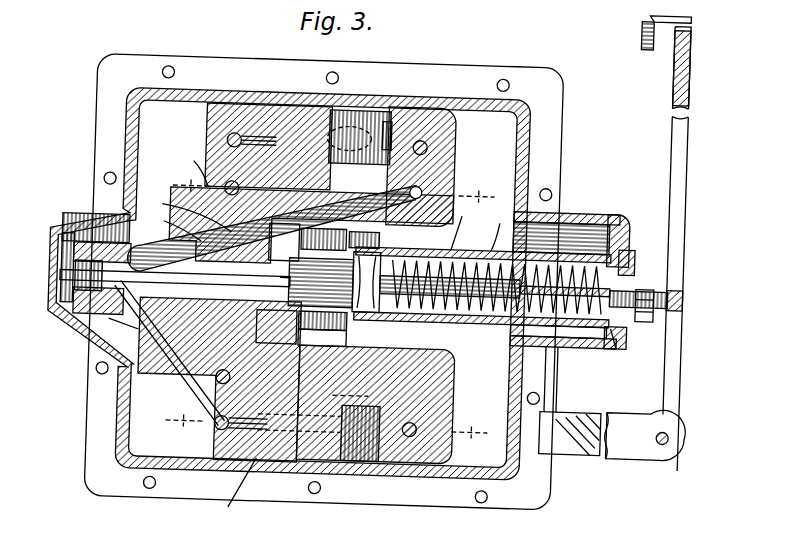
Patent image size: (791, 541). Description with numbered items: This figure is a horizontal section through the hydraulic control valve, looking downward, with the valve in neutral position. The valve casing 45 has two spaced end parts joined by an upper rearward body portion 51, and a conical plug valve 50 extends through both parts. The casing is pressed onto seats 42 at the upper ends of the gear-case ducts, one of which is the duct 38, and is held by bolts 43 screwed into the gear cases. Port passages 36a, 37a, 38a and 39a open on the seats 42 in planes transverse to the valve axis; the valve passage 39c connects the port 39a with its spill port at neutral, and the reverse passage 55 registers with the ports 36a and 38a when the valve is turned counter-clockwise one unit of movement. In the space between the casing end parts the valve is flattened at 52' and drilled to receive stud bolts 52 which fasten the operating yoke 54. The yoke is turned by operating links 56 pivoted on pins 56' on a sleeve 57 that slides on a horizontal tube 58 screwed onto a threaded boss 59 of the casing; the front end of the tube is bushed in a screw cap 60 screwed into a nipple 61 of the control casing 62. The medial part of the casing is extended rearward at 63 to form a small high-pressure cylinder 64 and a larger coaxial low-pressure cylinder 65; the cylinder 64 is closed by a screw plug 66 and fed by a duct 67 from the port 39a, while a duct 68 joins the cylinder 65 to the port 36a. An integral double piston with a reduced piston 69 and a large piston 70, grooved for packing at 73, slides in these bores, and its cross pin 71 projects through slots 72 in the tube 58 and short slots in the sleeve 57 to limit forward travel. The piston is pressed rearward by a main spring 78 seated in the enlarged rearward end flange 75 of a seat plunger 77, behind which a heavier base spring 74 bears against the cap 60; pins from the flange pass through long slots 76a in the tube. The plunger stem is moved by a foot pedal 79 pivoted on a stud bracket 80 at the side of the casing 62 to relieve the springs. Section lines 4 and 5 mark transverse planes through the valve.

The section line 4- 4 is at (327, 427).
The section line 5- 5 is at (335, 192).
The port passage 36a is at (445, 190).
The port passage 37a is at (458, 390).
The duct 38 is at (385, 115).
The port passage 38a is at (235, 140).
The port passage 39a is at (219, 432).
The port passage 39c is at (290, 440).
The seats 42 is at (235, 490).
The bolts 43 is at (225, 185).
The valve casing 45 is at (191, 163).
The conical plug valve 50 is at (355, 515).
The upper rearward body portion 51 is at (110, 325).
The stud bolts 52 is at (276, 327).
The flattened portion 52' is at (322, 320).
The operating yoke 54 is at (313, 406).
The reverse passage 55 is at (330, 125).
The operating links 56 is at (483, 273).
The pivot pins 56' is at (566, 274).
The sleeve 57 is at (502, 230).
The horizontal tube 58 is at (464, 226).
The exteriorly threaded boss 59 is at (284, 242).
The screw cap 60 is at (634, 262).
The nipple 61 is at (628, 236).
The control casing 62 is at (557, 126).
The rearward extension 63 is at (100, 235).
The high-pressure cylinder 64 is at (185, 260).
The low-pressure cylinder 65 is at (289, 275).
The screw plug 66 is at (58, 298).
The duct 67 is at (190, 360).
The duct 68 is at (186, 212).
The reduced piston 69 is at (171, 226).
The large piston 70 is at (206, 279).
The cross pin 71 is at (360, 281).
The slots 72 is at (340, 239).
The packing grooves 73 is at (60, 318).
The base spring 74 is at (626, 330).
The rearward end flange 75 is at (560, 320).
The long slots 76a is at (520, 318).
The seat plunger 77 is at (648, 312).
The main spring 78 is at (400, 292).
The foot pedal 79 is at (634, 14).
The stud bracket 80 is at (585, 447).